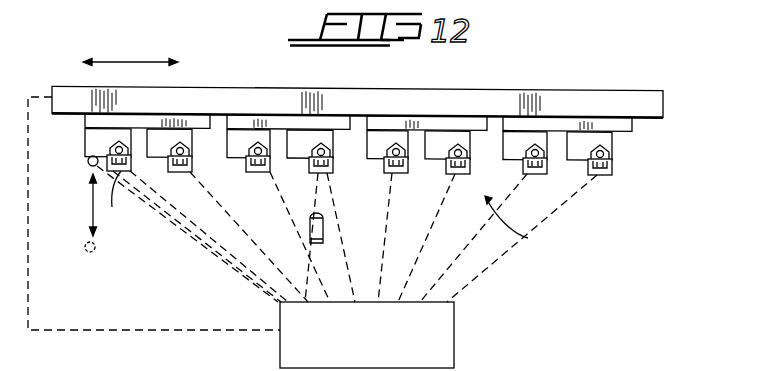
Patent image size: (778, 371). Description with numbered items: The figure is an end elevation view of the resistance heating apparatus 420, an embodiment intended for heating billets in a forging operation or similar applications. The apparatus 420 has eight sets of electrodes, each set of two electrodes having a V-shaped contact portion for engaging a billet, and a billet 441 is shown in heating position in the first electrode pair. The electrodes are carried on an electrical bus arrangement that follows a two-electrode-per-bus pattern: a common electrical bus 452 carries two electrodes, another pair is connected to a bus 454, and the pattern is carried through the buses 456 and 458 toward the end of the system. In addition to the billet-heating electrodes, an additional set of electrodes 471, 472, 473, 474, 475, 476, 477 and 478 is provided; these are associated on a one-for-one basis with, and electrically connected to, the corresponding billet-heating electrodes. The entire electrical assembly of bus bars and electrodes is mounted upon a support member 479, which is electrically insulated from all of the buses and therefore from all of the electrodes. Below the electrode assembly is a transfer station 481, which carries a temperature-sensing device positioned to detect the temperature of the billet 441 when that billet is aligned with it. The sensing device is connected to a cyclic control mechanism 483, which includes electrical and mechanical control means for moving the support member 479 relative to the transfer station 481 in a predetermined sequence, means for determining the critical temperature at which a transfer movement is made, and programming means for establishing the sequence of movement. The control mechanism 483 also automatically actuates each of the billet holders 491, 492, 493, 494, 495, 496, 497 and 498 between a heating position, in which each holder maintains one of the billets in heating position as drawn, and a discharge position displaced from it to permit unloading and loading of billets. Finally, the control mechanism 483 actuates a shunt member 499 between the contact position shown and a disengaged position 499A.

The resistance heating apparatus 420 is at (527, 221).
The billet 441 is at (133, 166).
The common electrical bus 452 is at (121, 119).
The bus 454 is at (325, 126).
The bus 456 is at (473, 125).
The bus 458 is at (626, 128).
The electrode 471 is at (85, 137).
The electrode 472 is at (165, 125).
The electrode 473 is at (236, 128).
The electrode 474 is at (301, 118).
The electrode 475 is at (374, 130).
The electrode 476 is at (434, 140).
The electrode 477 is at (512, 145).
The electrode 478 is at (573, 138).
The support member 479 is at (555, 100).
The transfer station 481 is at (335, 278).
The cyclic control mechanism 483 is at (454, 330).
The billet holder 491 is at (122, 201).
The billet holder 492 is at (192, 168).
The billet holder 493 is at (270, 170).
The billet holder 494 is at (331, 170).
The billet holder 495 is at (400, 172).
The billet holder 496 is at (458, 172).
The billet holder 497 is at (514, 176).
The billet holder 498 is at (601, 175).
The shunt member 499 is at (88, 160).
The disengaged position 499A is at (95, 251).